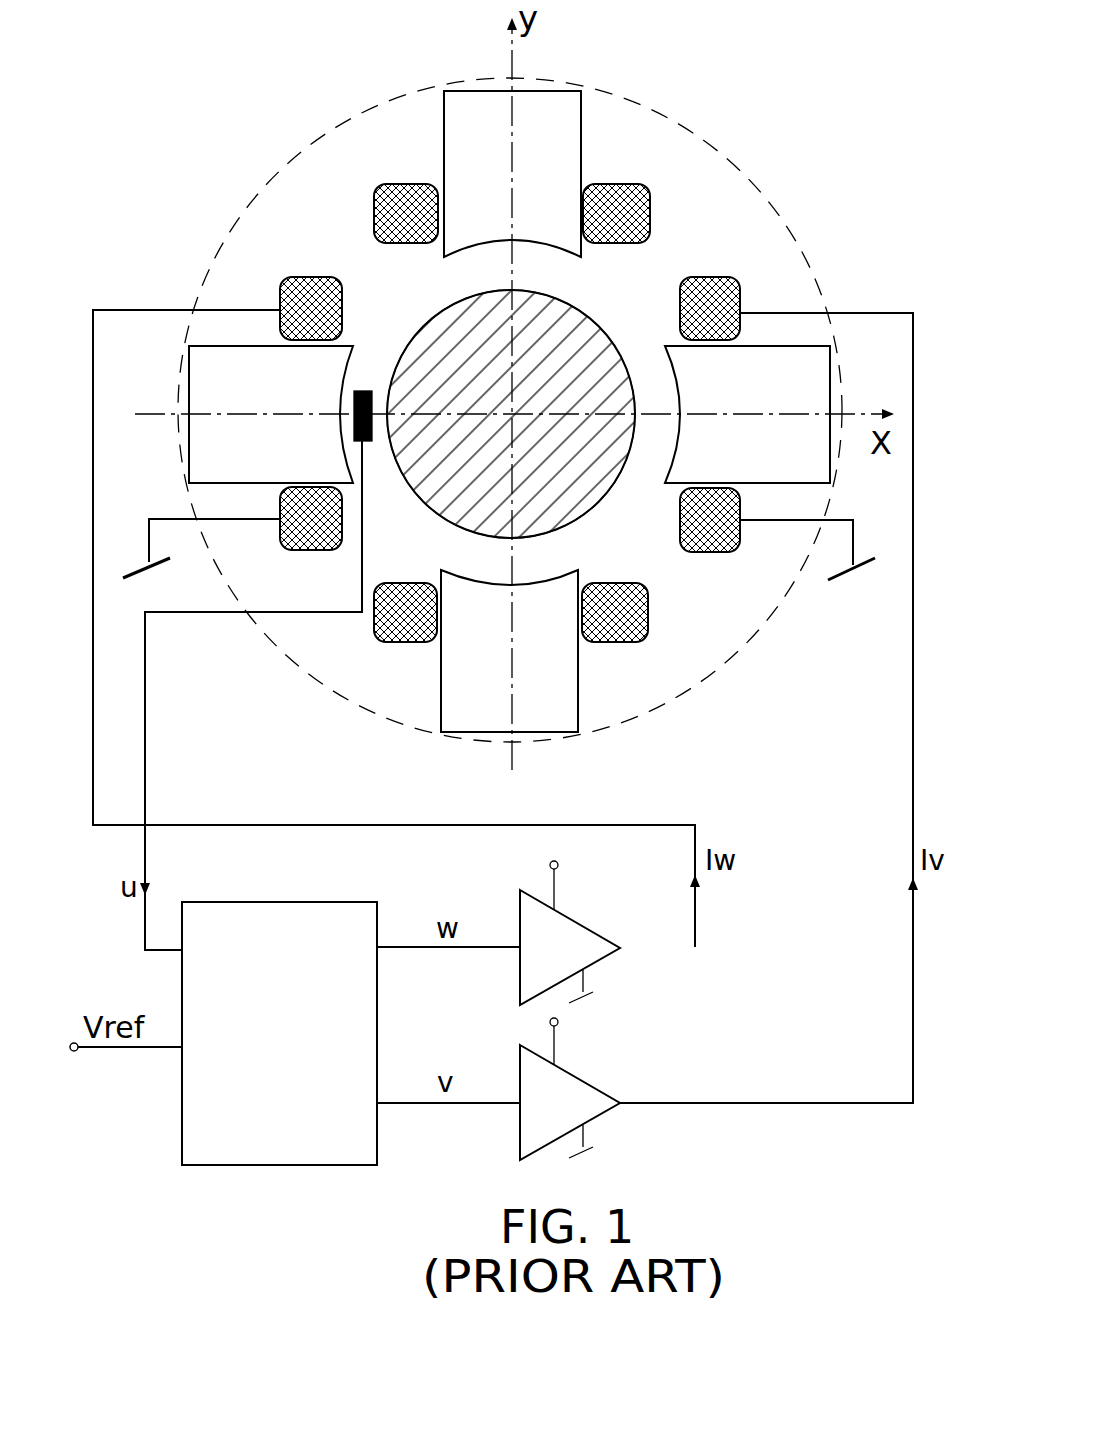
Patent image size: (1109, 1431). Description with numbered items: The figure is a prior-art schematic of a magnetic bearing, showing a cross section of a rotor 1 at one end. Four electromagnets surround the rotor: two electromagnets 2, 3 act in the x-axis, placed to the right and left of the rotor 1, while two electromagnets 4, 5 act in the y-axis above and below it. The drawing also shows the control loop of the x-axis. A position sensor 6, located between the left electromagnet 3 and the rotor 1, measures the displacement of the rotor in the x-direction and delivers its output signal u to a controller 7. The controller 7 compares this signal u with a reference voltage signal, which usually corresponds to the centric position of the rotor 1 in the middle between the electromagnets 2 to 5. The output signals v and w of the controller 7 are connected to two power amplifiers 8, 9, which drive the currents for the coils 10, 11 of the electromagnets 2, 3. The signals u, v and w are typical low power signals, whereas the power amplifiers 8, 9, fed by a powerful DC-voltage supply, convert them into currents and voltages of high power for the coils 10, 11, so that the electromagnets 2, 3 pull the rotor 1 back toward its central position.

The rotor 1 is at (511, 414).
The electromagnet 2 is at (747, 414).
The electromagnet 3 is at (271, 414).
The electromagnet 4 is at (512, 174).
The electromagnet 5 is at (509, 651).
The position sensor 6 is at (366, 441).
The controller 7 is at (355, 930).
The power amplifier 8 is at (572, 1090).
The power amplifier 9 is at (572, 937).
The coil 10 is at (728, 400).
The coil 11 is at (311, 392).